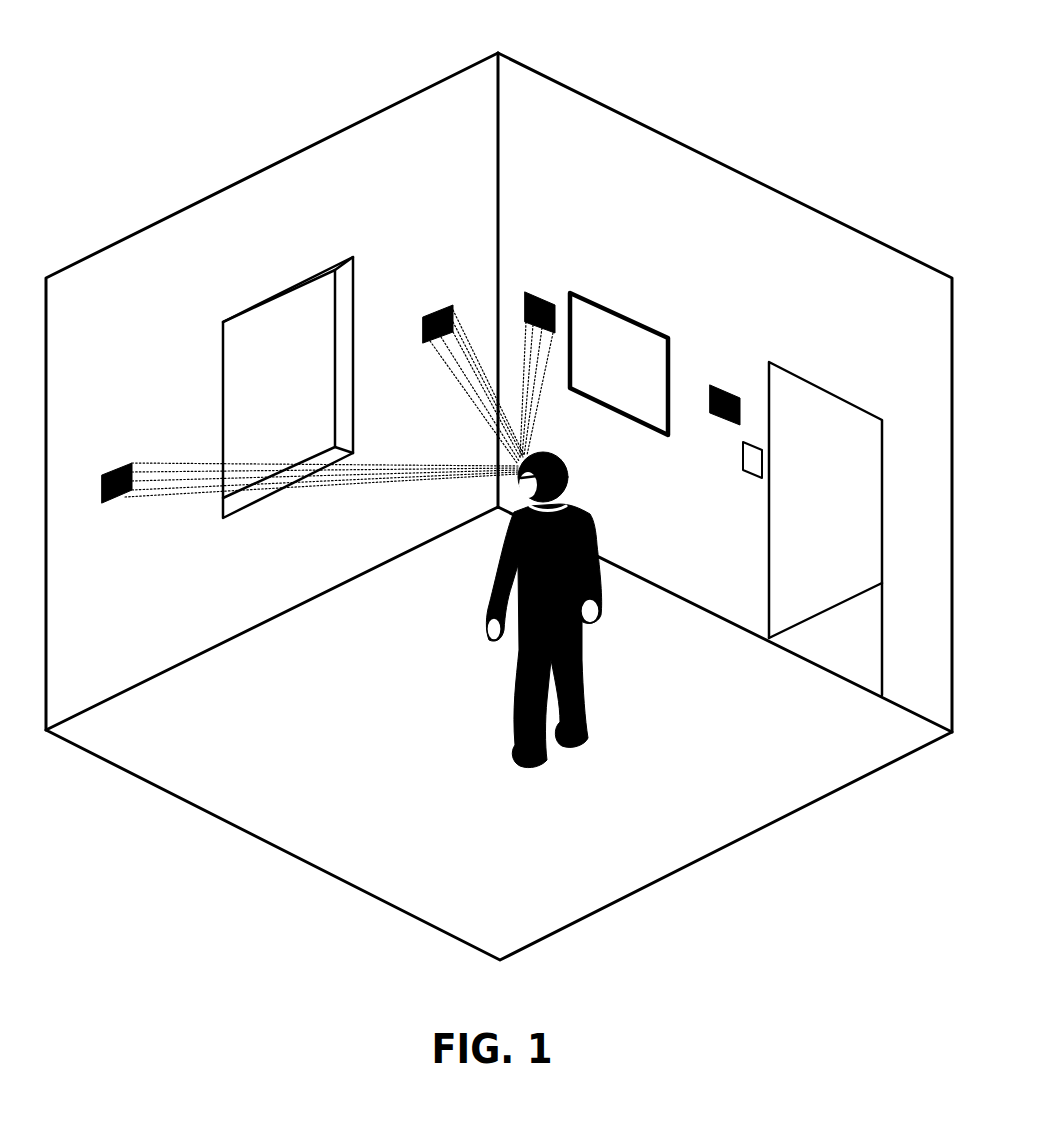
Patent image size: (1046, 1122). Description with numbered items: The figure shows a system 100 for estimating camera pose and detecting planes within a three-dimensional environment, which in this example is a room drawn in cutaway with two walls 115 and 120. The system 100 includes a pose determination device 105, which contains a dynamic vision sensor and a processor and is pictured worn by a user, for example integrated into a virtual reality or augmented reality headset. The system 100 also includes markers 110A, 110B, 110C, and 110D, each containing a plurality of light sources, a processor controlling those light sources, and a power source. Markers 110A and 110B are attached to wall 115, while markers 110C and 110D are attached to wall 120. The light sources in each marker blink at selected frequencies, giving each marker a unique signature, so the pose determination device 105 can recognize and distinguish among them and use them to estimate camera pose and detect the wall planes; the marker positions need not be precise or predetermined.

The system 100 is at (473, 27).
The pose determination device 105 is at (518, 487).
The marker 110A is at (114, 464).
The marker 110B is at (434, 310).
The marker 110C is at (536, 294).
The marker 110D is at (721, 389).
The wall 115 is at (184, 221).
The wall 120 is at (813, 221).